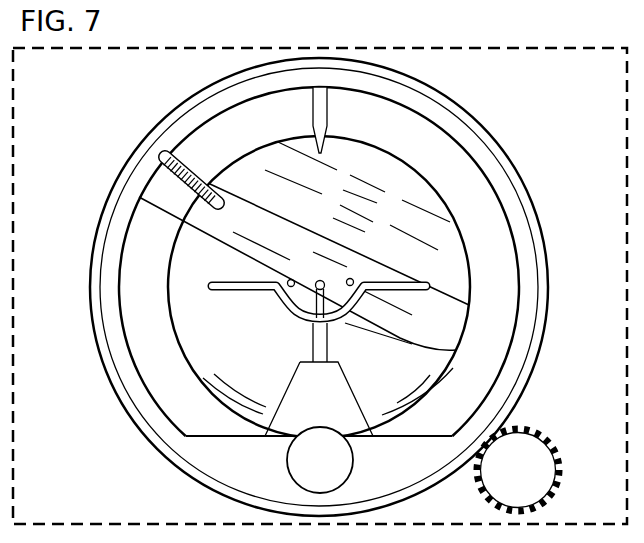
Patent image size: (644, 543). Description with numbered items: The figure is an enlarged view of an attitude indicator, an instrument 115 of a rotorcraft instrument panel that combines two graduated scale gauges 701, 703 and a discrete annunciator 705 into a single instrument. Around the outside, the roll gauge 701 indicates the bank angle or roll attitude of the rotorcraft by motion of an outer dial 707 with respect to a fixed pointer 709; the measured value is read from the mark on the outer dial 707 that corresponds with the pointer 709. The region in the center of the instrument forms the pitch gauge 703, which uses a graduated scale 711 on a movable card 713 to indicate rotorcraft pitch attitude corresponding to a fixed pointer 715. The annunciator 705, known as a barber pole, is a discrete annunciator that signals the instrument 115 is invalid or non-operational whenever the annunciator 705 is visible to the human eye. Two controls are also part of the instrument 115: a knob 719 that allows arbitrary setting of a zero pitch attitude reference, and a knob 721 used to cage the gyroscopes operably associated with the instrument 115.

The instrument 115 is at (489, 129).
The graduated scale gauge 701 is at (239, 134).
The graduated scale gauge 703 is at (417, 228).
The discrete annunciator 705 is at (179, 184).
The outer dial 707 is at (202, 148).
The fixed pointer 709 is at (330, 107).
The graduated scale 711 is at (376, 185).
The movable card 713 is at (460, 288).
The fixed pointer 715 is at (316, 290).
The knob 719 is at (287, 460).
The knob 721 is at (560, 480).